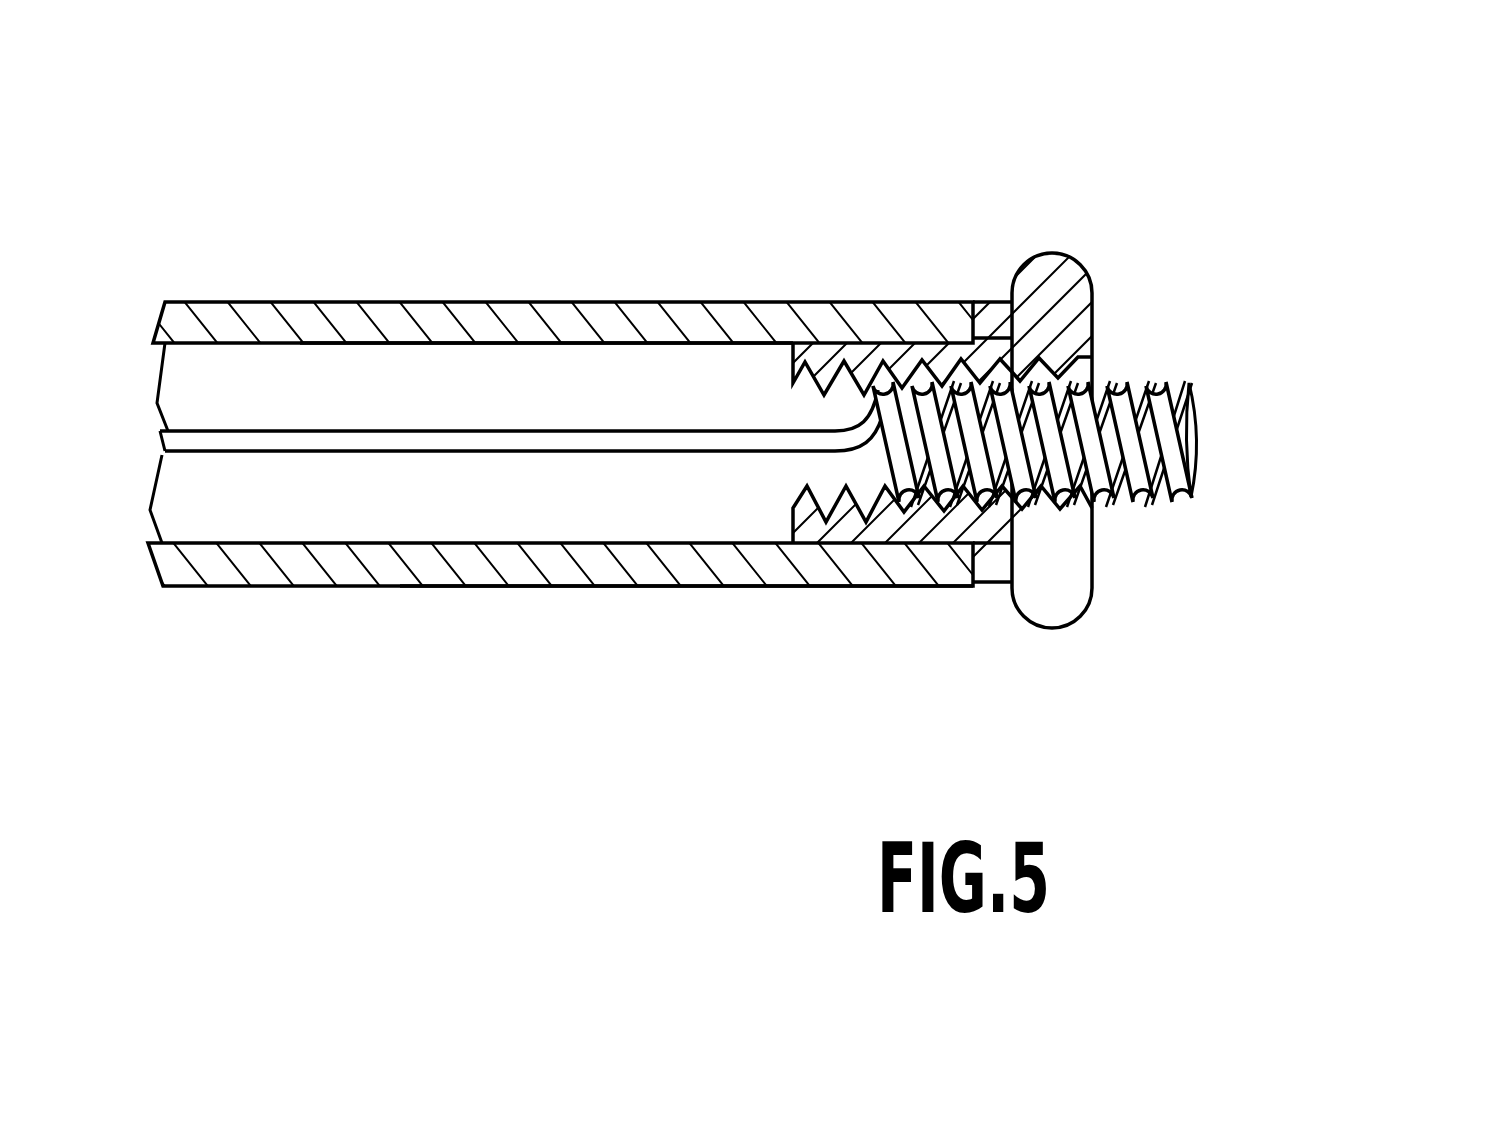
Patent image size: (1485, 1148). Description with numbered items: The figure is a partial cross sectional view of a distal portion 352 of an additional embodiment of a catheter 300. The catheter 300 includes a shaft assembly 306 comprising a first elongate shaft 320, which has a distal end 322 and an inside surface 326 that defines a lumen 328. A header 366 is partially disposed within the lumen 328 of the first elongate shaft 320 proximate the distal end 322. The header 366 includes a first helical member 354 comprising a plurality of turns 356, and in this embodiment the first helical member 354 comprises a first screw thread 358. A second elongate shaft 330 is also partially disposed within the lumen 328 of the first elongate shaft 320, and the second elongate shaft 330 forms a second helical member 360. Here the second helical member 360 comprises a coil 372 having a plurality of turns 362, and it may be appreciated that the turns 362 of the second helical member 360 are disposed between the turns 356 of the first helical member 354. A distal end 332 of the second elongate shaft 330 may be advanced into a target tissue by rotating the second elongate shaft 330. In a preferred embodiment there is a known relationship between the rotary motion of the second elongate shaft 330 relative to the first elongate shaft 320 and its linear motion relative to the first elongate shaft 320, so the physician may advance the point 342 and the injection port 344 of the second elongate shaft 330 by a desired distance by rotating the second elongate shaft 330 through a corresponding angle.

The catheter 300 is at (540, 760).
The shaft assembly 306 is at (268, 302).
The first elongate shaft 320 is at (425, 318).
The distal end 322 is at (957, 292).
The inside surface 326 is at (495, 355).
The lumen 328 is at (582, 358).
The second elongate shaft 330 is at (263, 443).
The distal end 332 is at (1222, 630).
The point 342 is at (1216, 361).
The injection port 344 is at (1240, 407).
The distal portion 352 is at (648, 710).
The first helical member 354 is at (1055, 368).
The turns 356 is at (847, 490).
The first screw thread 358 is at (798, 402).
The second helical member 360 is at (1276, 443).
The turns 362 is at (1140, 480).
The header 366 is at (1048, 285).
The coil 372 is at (1200, 497).